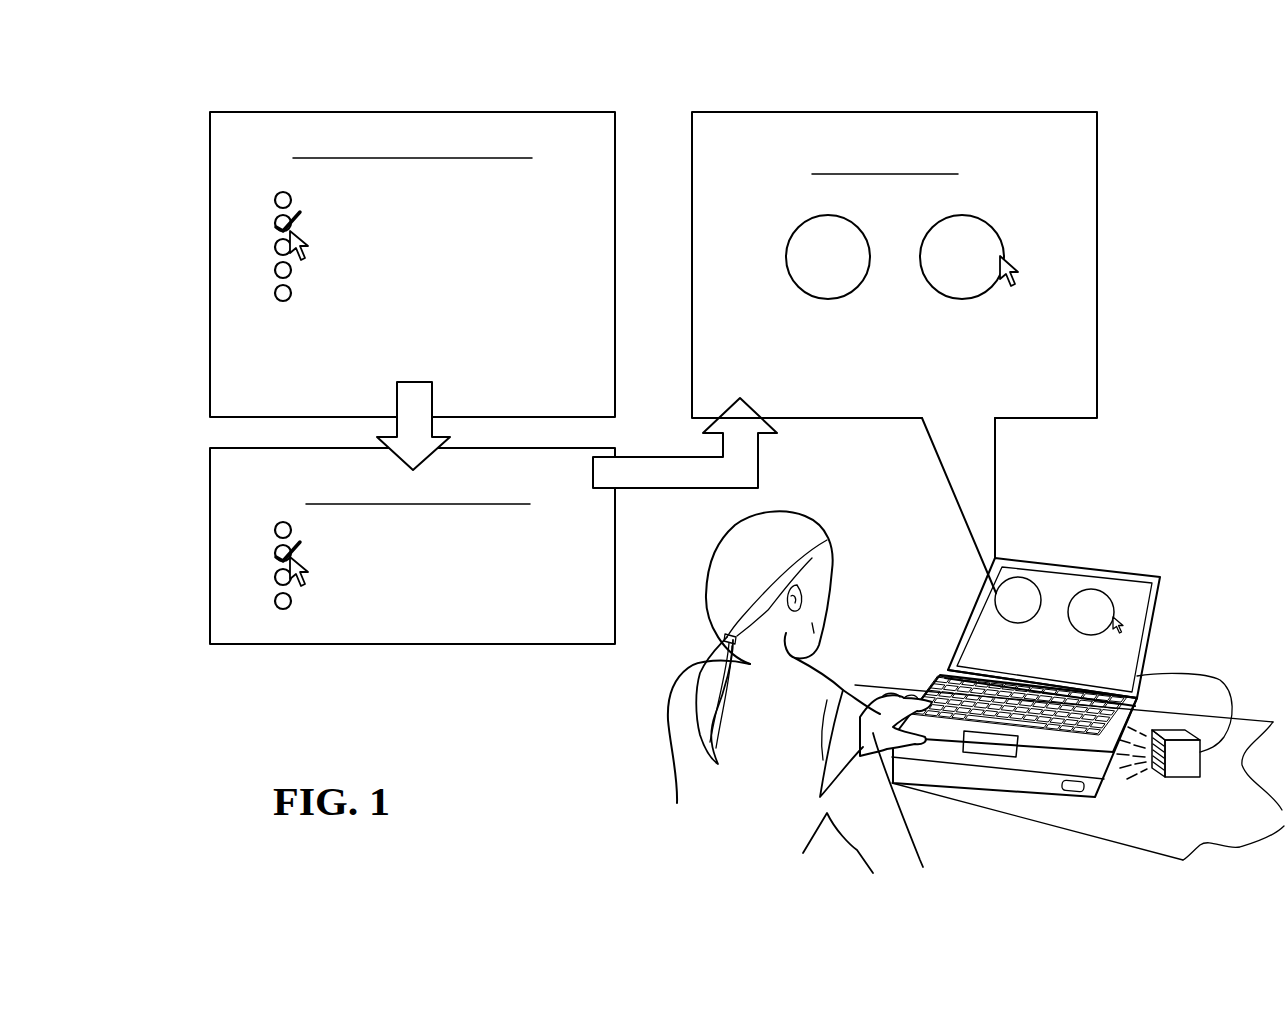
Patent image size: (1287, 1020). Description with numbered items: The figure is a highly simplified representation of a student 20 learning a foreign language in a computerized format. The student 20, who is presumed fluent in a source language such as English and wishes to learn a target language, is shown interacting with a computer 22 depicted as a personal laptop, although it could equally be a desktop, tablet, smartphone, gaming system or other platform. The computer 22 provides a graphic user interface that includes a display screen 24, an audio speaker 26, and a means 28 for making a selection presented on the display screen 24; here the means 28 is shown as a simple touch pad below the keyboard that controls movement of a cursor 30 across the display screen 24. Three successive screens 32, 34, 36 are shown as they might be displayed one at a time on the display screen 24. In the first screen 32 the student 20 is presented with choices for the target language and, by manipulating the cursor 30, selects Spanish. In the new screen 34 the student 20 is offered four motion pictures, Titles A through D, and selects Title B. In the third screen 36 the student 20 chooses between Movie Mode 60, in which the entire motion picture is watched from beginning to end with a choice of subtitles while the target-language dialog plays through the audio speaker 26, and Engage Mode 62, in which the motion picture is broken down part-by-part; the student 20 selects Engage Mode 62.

The student 20 is at (690, 775).
The computer 22 is at (1069, 682).
The display screen 24 is at (1057, 592).
The audio speaker 26 is at (1183, 765).
The means for making a selection 28 is at (986, 748).
The cursor 30 is at (290, 232).
The first screen 32 is at (210, 152).
The second screen 34 is at (210, 497).
The third screen 36 is at (916, 312).
The Movie Mode 60 is at (802, 224).
The Engage Mode 62 is at (988, 224).